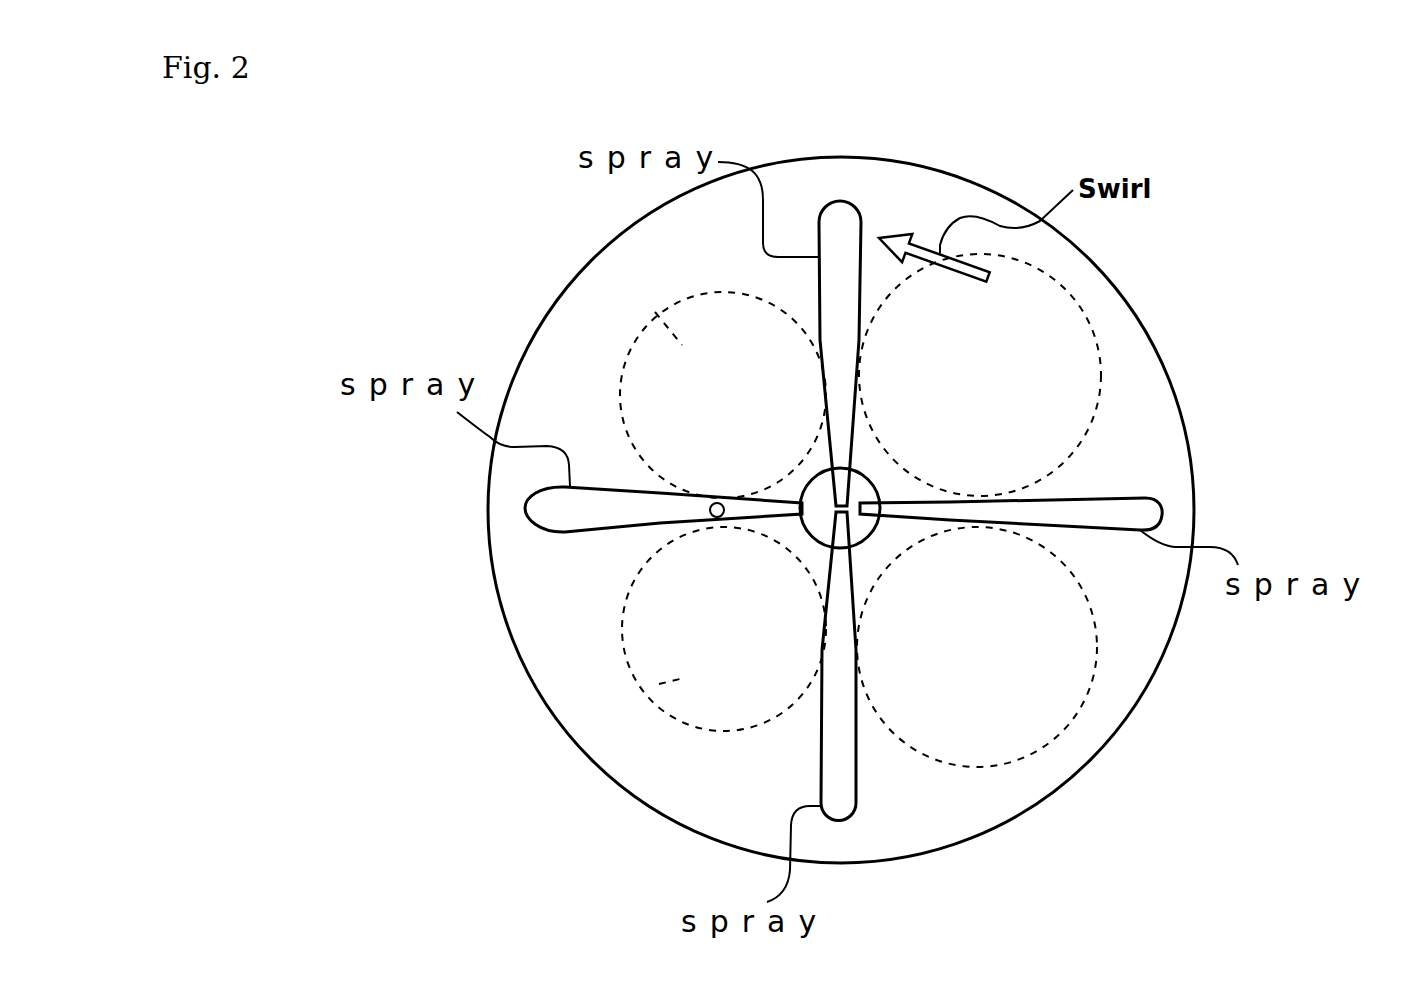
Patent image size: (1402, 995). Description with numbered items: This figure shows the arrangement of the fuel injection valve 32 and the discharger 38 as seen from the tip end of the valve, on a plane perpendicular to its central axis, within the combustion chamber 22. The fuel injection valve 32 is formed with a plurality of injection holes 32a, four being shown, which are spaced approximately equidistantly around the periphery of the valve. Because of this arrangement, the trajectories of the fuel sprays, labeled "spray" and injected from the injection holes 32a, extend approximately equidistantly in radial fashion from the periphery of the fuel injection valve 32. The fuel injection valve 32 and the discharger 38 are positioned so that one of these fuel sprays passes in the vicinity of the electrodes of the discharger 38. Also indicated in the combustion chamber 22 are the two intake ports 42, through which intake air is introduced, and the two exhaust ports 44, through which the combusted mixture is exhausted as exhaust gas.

The combustion chamber 22 is at (502, 502).
The fuel injection valve 32 is at (866, 474).
The injection holes 32a is at (830, 463).
The discharger 38 is at (711, 516).
The intake ports 42 is at (1063, 363).
The exhaust ports 44 is at (635, 292).